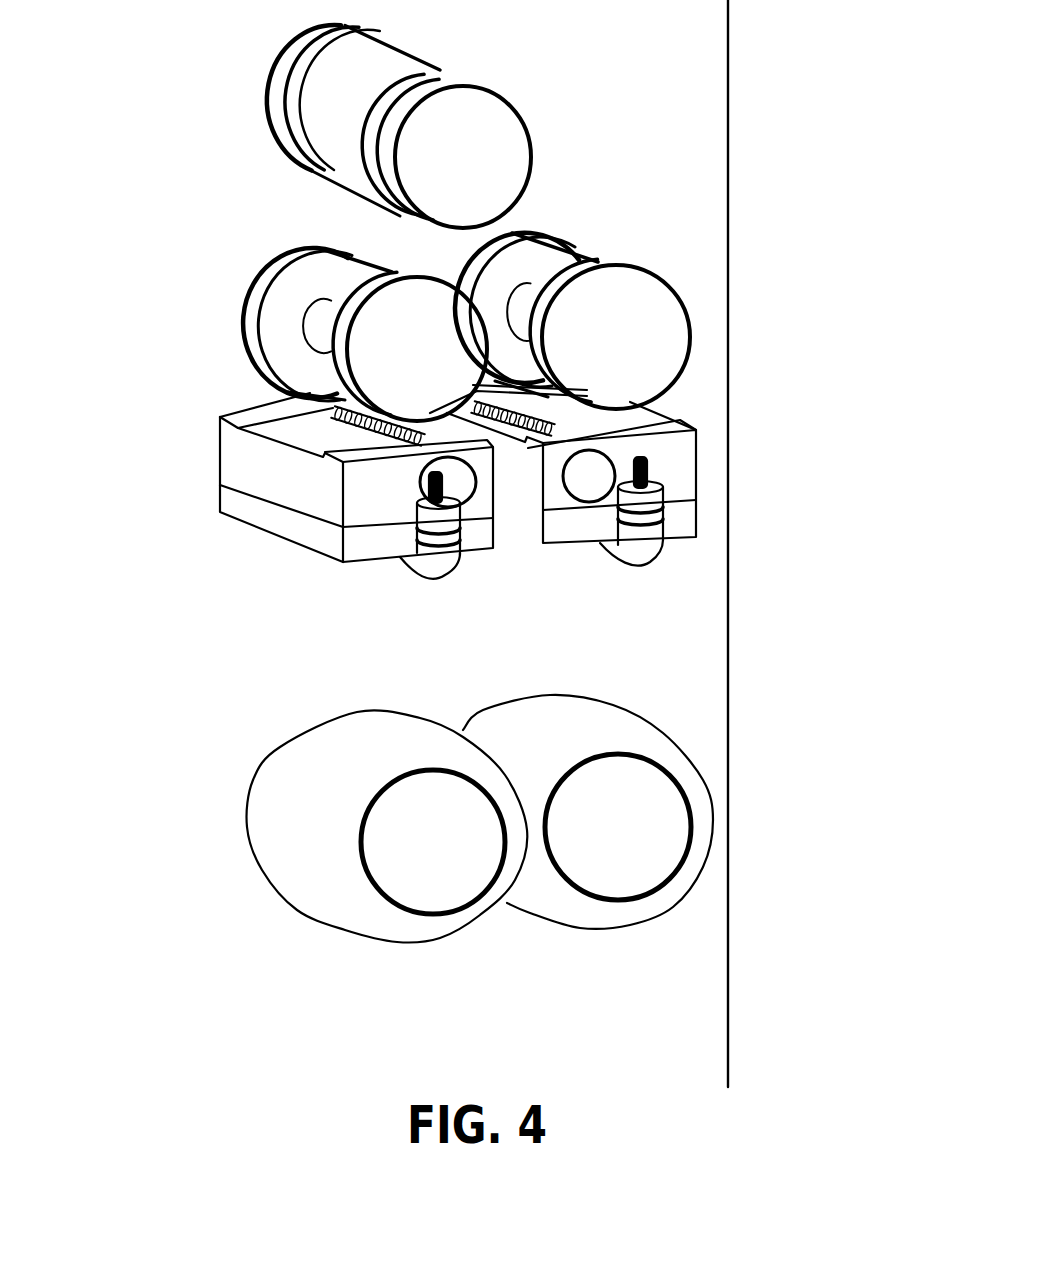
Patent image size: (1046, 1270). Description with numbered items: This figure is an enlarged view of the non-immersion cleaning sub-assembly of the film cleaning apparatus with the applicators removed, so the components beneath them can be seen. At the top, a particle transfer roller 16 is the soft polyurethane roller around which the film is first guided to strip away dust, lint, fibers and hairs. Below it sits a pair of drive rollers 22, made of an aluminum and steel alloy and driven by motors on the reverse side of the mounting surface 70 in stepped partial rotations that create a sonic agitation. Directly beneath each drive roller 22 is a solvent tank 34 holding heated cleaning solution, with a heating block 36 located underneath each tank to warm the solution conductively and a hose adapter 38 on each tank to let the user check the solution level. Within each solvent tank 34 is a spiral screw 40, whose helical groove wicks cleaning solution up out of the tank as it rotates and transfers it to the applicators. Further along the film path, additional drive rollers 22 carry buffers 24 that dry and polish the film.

The particle transfer roller 16 is at (500, 150).
The drive roller 22 is at (408, 353).
The buffer 24 is at (303, 777).
The solvent tank 34 is at (677, 458).
The heating block 36 is at (332, 548).
The hose adapter 38 is at (417, 498).
The spiral screw 40 is at (228, 408).
The mounting surface 70 is at (467, 633).